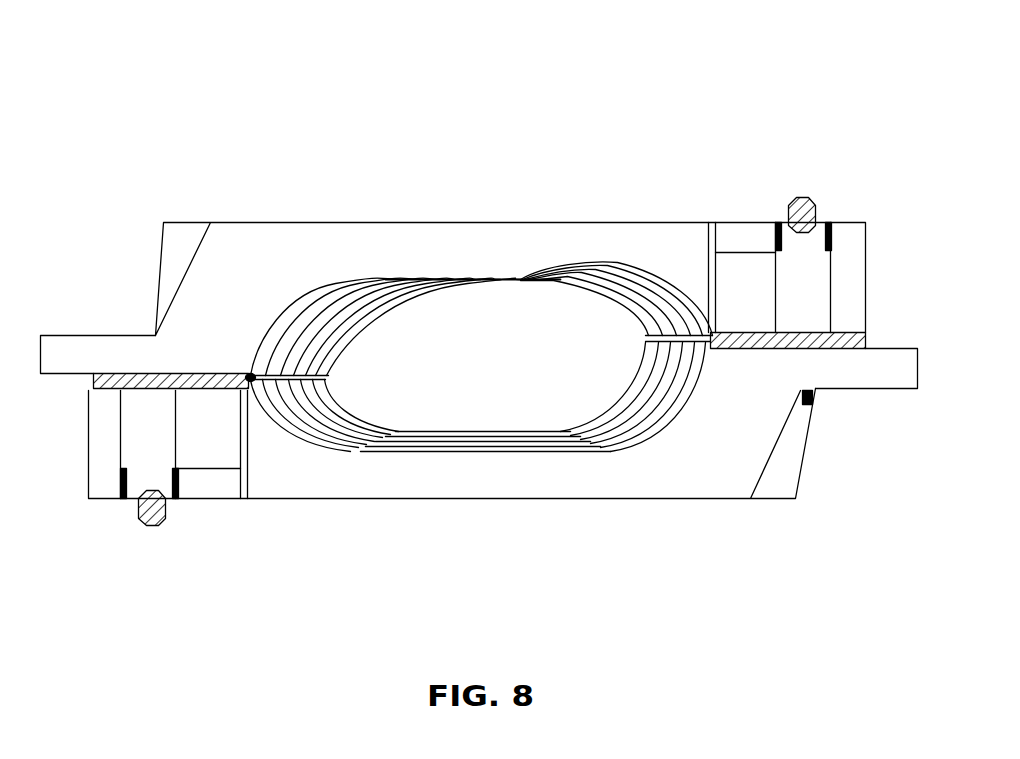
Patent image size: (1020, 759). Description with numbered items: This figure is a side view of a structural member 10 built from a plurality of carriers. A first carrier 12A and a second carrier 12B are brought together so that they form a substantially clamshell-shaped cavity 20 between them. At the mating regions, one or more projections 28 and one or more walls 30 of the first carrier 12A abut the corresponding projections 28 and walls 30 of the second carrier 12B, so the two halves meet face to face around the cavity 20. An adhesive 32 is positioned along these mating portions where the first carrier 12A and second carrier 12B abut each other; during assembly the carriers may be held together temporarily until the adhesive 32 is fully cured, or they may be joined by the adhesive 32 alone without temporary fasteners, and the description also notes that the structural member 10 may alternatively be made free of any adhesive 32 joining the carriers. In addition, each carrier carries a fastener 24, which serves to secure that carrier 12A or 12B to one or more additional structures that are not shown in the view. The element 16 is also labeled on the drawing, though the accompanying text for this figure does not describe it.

The fluid pressure assembly 10 is at (205, 98).
The upper housing portion 12A is at (350, 223).
The lower housing portion 12B is at (533, 498).
The bladder 16 is at (665, 400).
The internal chamber 20 is at (454, 373).
The fastener 24 is at (795, 205).
The flange 28 is at (85, 305).
The bladder wall 30 is at (523, 257).
The seal 32 is at (92, 388).